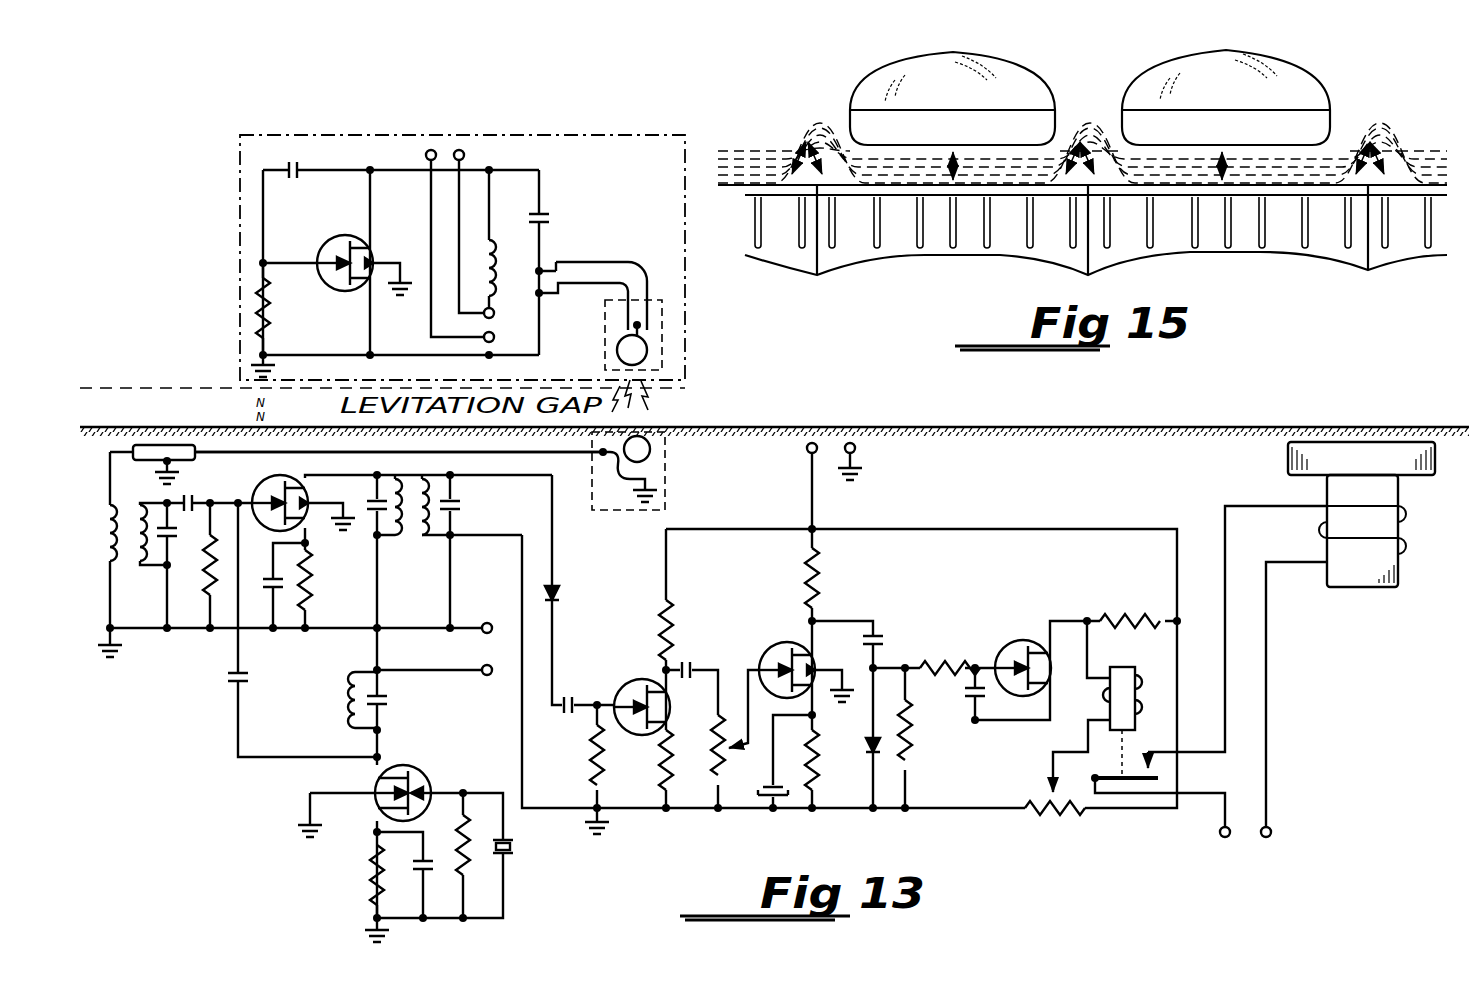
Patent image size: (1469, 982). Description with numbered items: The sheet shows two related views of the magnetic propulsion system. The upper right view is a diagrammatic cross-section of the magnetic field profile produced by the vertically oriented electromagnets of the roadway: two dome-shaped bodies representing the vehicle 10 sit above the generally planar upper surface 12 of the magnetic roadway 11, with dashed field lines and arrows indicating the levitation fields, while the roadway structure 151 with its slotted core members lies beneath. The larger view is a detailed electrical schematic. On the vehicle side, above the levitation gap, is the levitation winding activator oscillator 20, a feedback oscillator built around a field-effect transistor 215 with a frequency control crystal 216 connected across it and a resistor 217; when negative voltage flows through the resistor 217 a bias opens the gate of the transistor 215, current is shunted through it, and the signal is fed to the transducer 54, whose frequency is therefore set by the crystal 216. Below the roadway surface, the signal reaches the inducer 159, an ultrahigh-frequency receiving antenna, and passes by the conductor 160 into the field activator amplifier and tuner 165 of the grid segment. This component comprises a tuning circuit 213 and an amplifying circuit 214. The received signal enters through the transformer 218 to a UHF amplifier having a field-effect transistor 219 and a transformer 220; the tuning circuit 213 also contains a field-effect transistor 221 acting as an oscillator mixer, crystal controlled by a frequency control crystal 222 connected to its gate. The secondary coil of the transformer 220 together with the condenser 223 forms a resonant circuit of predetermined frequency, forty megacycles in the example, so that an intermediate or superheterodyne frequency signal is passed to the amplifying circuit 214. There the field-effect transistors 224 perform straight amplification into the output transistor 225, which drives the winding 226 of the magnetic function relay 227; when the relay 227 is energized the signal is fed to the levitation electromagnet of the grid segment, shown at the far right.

In FIG. 15, the vehicle 10 is at (880, 68).
In FIG. 13, the magnetic roadway 11 is at (858, 423).
In FIG. 15, the magnetic roadway 11 is at (756, 180).
In FIG. 13, the upper surface 12 is at (772, 427).
In FIG. 15, the upper surface 12 is at (1416, 180).
In FIG. 15, the track structure with slots 151 is at (995, 262).
In FIG. 13, the levitation winding activator oscillator 20 is at (212, 241).
In FIG. 13, the field-effect transistor 215 is at (352, 234).
In FIG. 13, the frequency control crystal 216 is at (300, 165).
In FIG. 13, the resistor 217 is at (270, 302).
In FIG. 13, the transducer 54 is at (647, 350).
In FIG. 13, the inducer 159 is at (668, 464).
In FIG. 13, the conductor 160 is at (526, 452).
In FIG. 13, the field activator amplifier and tuner 165 is at (198, 680).
In FIG. 13, the transformer 218 is at (133, 556).
In FIG. 13, the field-effect transistor 219 is at (262, 480).
In FIG. 13, the transformer 220 is at (418, 543).
In FIG. 13, the condenser 223 is at (462, 497).
In FIG. 13, the tuning circuit 213 is at (333, 853).
In FIG. 13, the field-effect transistor 221 is at (420, 772).
In FIG. 13, the frequency control crystal 222 is at (513, 858).
In FIG. 13, the amplifying circuit 214 is at (702, 825).
In FIG. 13, the field-effect transistors 224 is at (634, 674).
In FIG. 13, the output transistor 225 is at (1010, 644).
In FIG. 13, the winding 226 is at (1150, 660).
In FIG. 13, the magnetic function relay 227 is at (1096, 702).